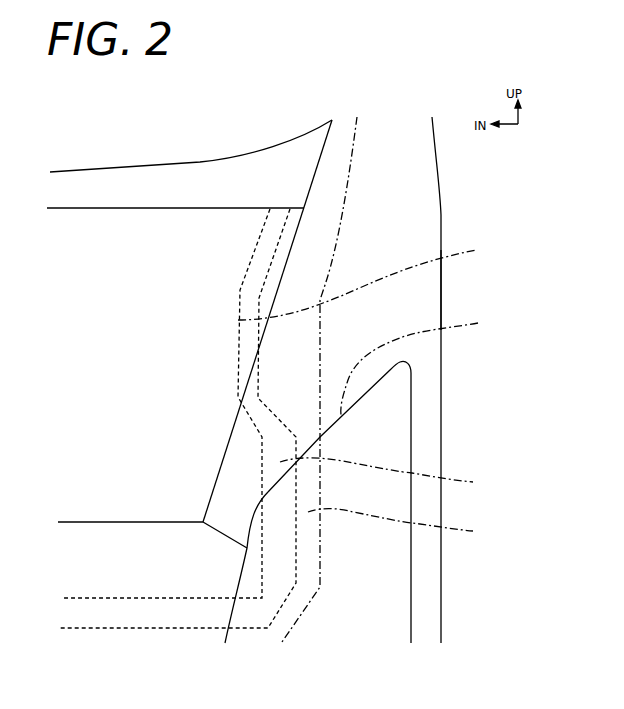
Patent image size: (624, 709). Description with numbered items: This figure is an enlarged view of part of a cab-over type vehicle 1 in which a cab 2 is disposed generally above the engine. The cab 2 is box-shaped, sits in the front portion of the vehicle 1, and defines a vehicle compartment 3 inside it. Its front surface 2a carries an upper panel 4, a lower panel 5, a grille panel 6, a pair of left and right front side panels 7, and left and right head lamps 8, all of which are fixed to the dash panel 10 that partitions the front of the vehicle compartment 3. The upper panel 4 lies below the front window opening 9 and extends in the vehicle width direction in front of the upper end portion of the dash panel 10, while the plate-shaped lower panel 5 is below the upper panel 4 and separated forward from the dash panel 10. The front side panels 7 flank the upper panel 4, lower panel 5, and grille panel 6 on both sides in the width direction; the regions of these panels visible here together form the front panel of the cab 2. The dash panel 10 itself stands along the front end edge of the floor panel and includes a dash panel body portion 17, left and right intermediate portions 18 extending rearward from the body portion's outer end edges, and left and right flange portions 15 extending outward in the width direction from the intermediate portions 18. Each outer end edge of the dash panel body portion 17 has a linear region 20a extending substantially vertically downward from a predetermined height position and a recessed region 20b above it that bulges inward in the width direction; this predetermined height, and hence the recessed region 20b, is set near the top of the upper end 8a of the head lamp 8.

The vehicle 1 is at (503, 177).
The cab 2 is at (443, 213).
The front surface 2a is at (125, 233).
The vehicle compartment 3 is at (176, 148).
The upper panel 4 is at (85, 210).
The lower panel 5 is at (212, 497).
The grille panel 6 is at (236, 606).
The front side panel 7 is at (443, 290).
The head lamp 8 is at (412, 422).
The upper end of head lamp 8a is at (421, 364).
The front window opening 9 is at (202, 162).
The dash panel 10 is at (320, 555).
The flange portion 15 is at (404, 524).
The dash panel body portion 17 is at (167, 565).
The intermediate portion 18 is at (390, 475).
The linear region 20a is at (262, 565).
The recessed region 20b is at (374, 280).